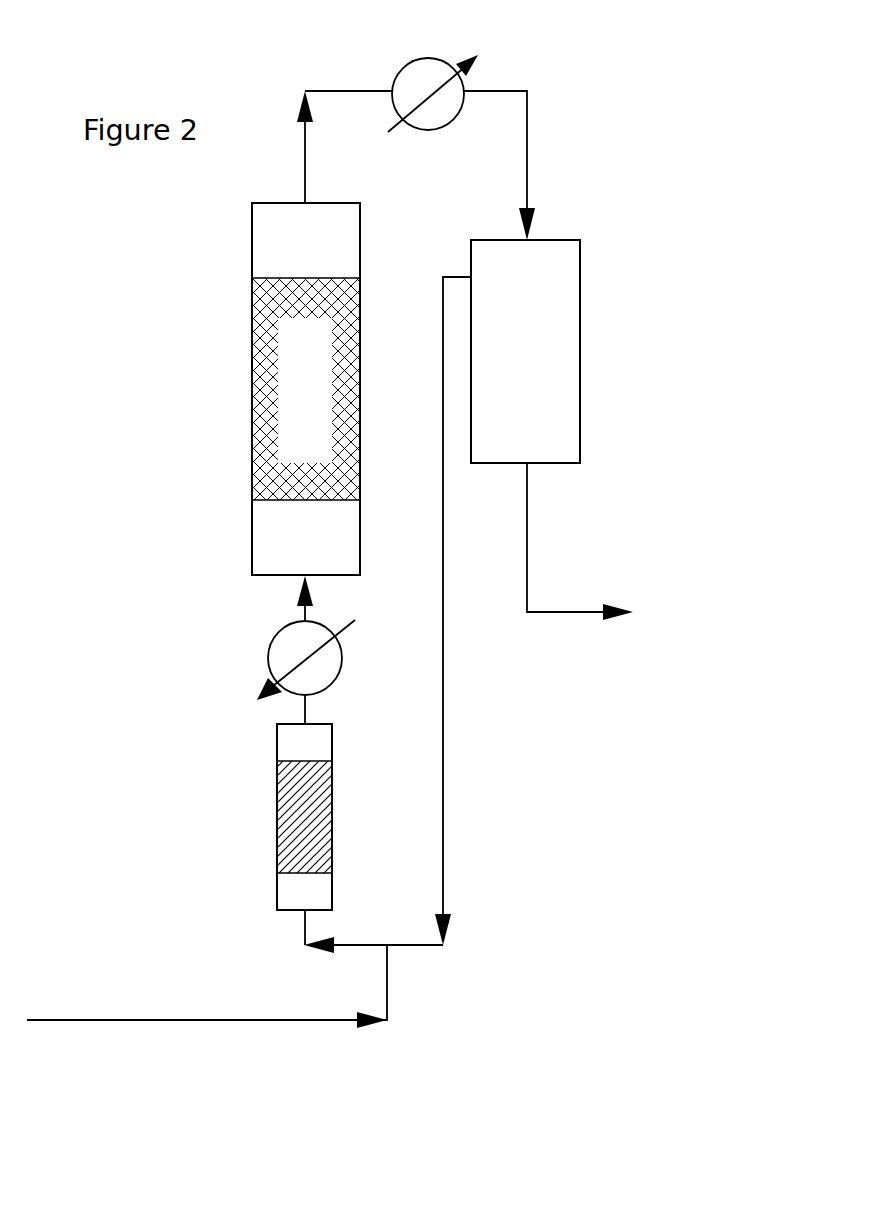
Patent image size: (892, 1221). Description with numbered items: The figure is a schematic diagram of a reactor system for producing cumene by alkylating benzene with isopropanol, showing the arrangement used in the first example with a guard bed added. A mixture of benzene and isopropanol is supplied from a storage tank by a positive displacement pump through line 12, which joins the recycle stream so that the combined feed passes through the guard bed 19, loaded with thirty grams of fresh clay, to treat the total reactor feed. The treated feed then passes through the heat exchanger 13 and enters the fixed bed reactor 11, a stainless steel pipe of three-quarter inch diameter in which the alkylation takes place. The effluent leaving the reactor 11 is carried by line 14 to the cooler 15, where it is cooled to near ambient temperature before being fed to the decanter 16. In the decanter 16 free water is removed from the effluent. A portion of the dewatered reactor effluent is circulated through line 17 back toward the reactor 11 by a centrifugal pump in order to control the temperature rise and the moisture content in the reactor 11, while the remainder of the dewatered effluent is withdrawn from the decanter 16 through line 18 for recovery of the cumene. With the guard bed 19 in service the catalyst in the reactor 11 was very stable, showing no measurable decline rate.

The fixed bed reactor 11 is at (253, 433).
The line 12 is at (247, 1025).
The heat exchanger 13 is at (332, 680).
The line 14 is at (333, 90).
The cooler 15 is at (433, 62).
The decanter 16 is at (578, 320).
The line 17 is at (445, 763).
The line 18 is at (602, 552).
The guard bed 19 is at (333, 820).